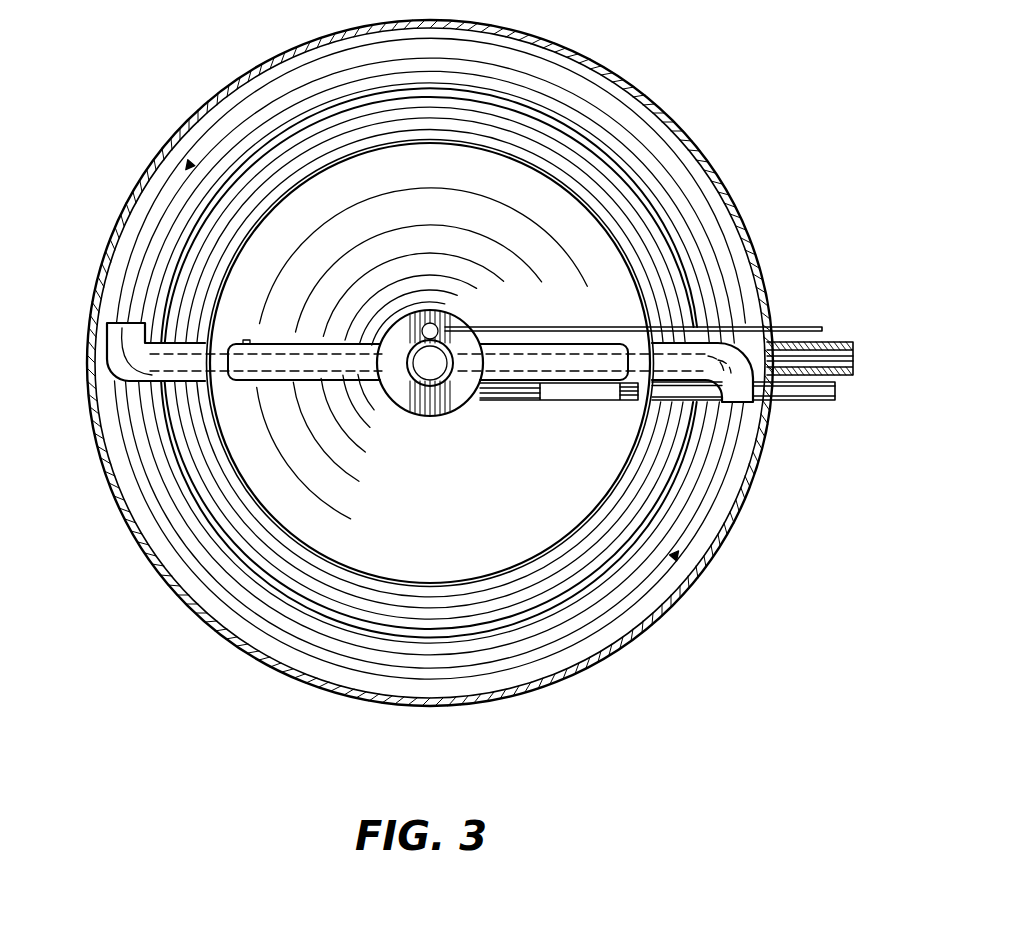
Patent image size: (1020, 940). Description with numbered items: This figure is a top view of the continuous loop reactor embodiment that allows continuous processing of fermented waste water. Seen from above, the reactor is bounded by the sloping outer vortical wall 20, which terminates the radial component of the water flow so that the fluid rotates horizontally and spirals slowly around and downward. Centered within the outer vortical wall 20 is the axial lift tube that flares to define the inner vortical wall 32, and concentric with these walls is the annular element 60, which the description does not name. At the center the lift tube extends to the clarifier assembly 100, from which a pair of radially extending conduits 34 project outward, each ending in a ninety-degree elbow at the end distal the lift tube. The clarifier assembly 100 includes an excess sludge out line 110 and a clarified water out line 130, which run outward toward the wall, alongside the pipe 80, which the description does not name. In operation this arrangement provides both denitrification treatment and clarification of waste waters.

The outer vortical wall 20 is at (718, 550).
The inner vortical wall 32 is at (607, 227).
The radially extending conduits 34 is at (112, 378).
The annular ring 60 is at (680, 265).
The inlet pipe 80 is at (853, 337).
The clarifier assembly 100 is at (440, 415).
The excess sludge out line 110 is at (805, 402).
The clarified water out line 130 is at (787, 325).